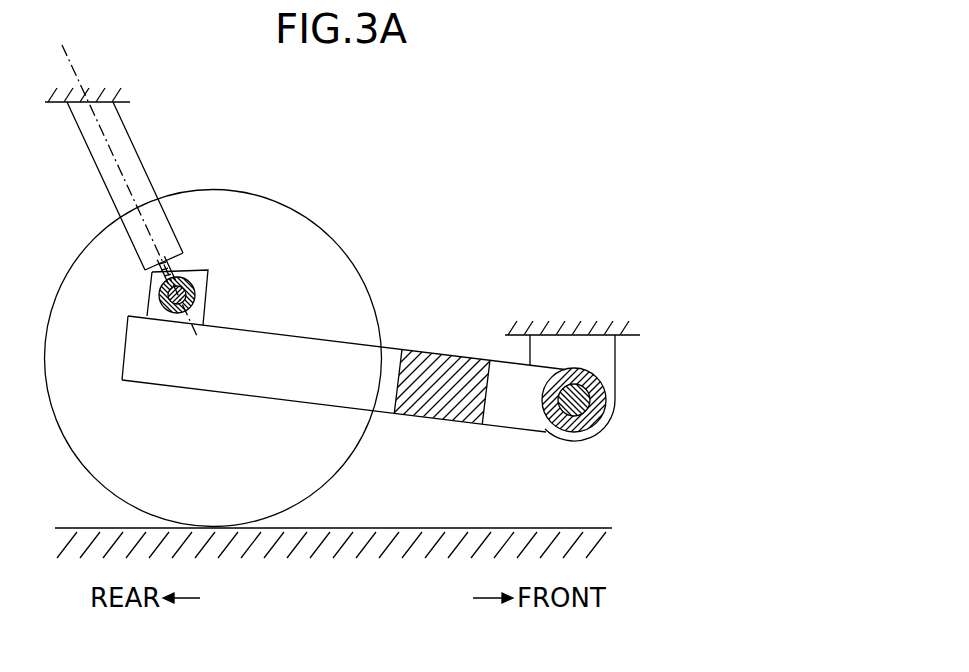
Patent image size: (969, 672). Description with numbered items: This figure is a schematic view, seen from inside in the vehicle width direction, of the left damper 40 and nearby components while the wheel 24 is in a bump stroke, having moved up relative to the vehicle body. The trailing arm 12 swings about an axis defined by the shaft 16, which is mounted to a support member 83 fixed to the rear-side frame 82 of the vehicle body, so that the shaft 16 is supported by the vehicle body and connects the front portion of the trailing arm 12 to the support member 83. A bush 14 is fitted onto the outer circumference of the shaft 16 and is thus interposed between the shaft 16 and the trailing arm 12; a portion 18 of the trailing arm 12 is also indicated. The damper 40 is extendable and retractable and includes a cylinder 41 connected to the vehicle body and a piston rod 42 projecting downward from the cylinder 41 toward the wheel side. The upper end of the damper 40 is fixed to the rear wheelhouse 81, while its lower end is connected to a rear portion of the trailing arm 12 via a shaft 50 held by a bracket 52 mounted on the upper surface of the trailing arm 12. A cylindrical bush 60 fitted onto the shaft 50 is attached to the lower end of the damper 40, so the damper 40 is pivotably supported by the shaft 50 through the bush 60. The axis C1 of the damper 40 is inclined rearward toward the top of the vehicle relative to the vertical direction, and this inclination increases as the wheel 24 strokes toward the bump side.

The trailing arm 12 is at (367, 345).
The bush 14 is at (563, 408).
The shaft 16 is at (543, 418).
The elastic portion of swing arm 18 is at (455, 364).
The wheel 24 is at (330, 237).
The damper 40 is at (182, 193).
The cylinder 41 is at (133, 147).
The piston rod 42 is at (172, 264).
The shaft 50 is at (159, 296).
The bracket 52 is at (208, 282).
The bush 60 is at (195, 294).
The rear wheelhouse 81 is at (55, 104).
The rear-side frame 82 is at (628, 337).
The support member 83 is at (607, 440).
The axis of the damper C1 is at (100, 133).